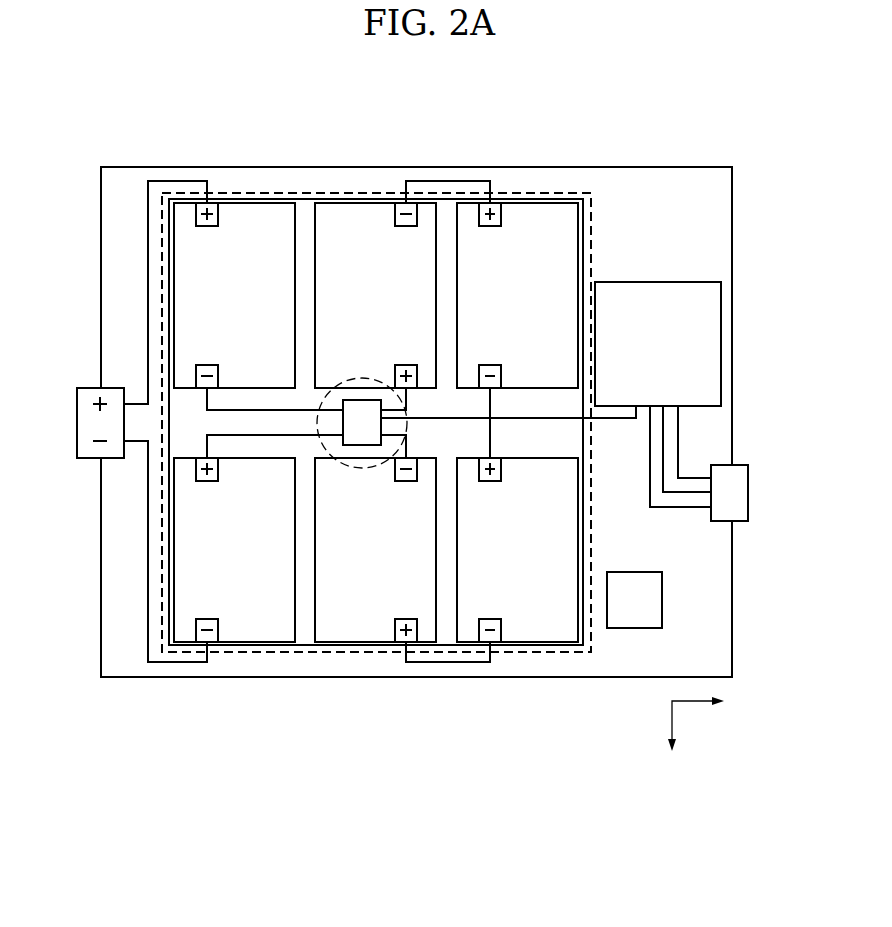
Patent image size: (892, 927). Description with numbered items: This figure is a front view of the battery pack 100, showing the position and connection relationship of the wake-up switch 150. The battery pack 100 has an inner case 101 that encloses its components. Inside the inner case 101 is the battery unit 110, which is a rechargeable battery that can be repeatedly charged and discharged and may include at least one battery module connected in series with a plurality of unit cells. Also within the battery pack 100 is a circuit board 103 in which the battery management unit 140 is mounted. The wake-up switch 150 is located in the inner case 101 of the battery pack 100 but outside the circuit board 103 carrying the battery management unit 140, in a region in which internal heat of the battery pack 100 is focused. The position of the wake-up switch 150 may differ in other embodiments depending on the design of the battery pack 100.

The battery pack 100 is at (131, 159).
The inner case 101 is at (632, 166).
The battery unit 110 is at (531, 192).
The circuit board 103 is at (660, 276).
The battery management unit 140 is at (722, 343).
The wake-up switch 150 is at (362, 446).